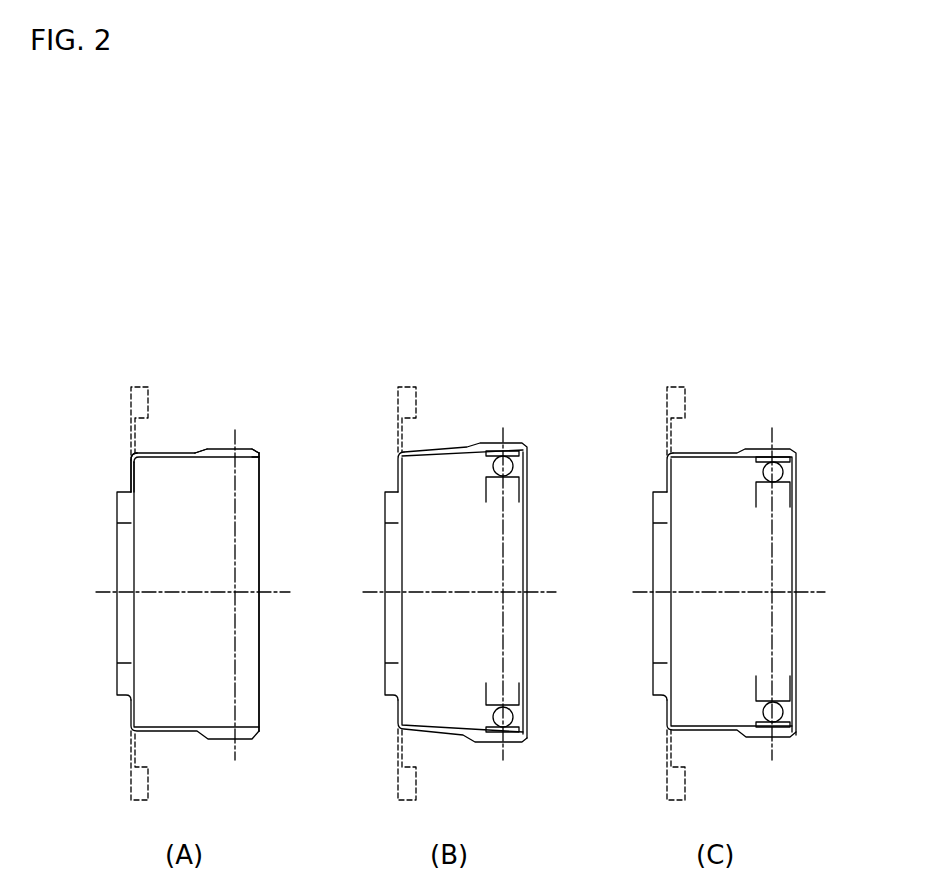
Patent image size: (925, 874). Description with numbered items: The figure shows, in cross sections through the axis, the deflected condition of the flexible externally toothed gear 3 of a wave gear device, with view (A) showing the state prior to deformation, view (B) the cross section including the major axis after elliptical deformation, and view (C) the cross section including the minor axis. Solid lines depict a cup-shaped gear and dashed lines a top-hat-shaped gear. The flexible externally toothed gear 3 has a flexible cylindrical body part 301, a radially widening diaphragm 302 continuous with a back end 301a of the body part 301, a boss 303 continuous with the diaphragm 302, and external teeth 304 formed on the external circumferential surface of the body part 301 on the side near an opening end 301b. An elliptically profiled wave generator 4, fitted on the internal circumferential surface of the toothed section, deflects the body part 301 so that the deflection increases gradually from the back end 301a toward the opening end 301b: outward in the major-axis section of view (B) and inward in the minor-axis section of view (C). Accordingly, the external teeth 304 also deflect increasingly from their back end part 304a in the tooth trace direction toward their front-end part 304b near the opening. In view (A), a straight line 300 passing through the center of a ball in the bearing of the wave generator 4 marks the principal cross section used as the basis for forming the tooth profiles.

The flexible externally toothed gear 3 is at (160, 368).
The wave generator 4 is at (513, 491).
The straight line 300 is at (237, 530).
The flexible cylindrical body part 301 is at (173, 458).
The back end 301a is at (131, 460).
The opening end 301b is at (259, 455).
The diaphragm 302 is at (131, 473).
The boss 303 is at (122, 508).
The external teeth 304 is at (241, 450).
The back end part 304a is at (207, 450).
The front-end part 304b is at (255, 451).